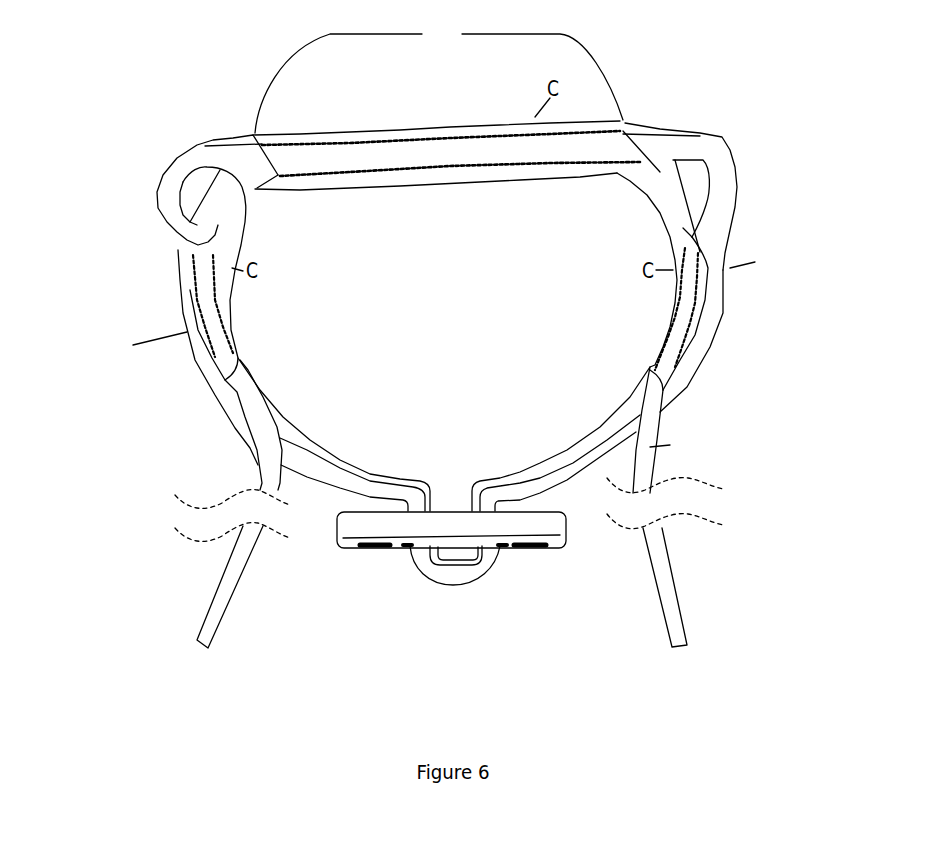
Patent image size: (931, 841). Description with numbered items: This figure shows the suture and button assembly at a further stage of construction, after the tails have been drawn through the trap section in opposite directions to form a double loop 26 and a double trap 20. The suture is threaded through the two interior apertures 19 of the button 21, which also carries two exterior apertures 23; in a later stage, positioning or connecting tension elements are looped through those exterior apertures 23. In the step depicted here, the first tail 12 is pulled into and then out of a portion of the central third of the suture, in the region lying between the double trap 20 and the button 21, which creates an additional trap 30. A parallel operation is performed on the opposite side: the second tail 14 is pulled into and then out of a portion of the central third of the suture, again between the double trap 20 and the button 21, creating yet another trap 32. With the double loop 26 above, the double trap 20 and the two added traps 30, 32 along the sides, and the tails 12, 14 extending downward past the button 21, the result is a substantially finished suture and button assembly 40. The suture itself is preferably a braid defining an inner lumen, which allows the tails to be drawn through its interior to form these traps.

The first tail 12 is at (687, 648).
The second tail 14 is at (198, 647).
The interior apertures 19 is at (496, 562).
The double trap 20 is at (439, 77).
The button 21 is at (566, 542).
The exterior apertures 23 is at (372, 553).
The double loop 26 is at (737, 362).
The additional trap 30 is at (702, 310).
The trap 32 is at (197, 293).
The suture and button assembly 40 is at (137, 252).